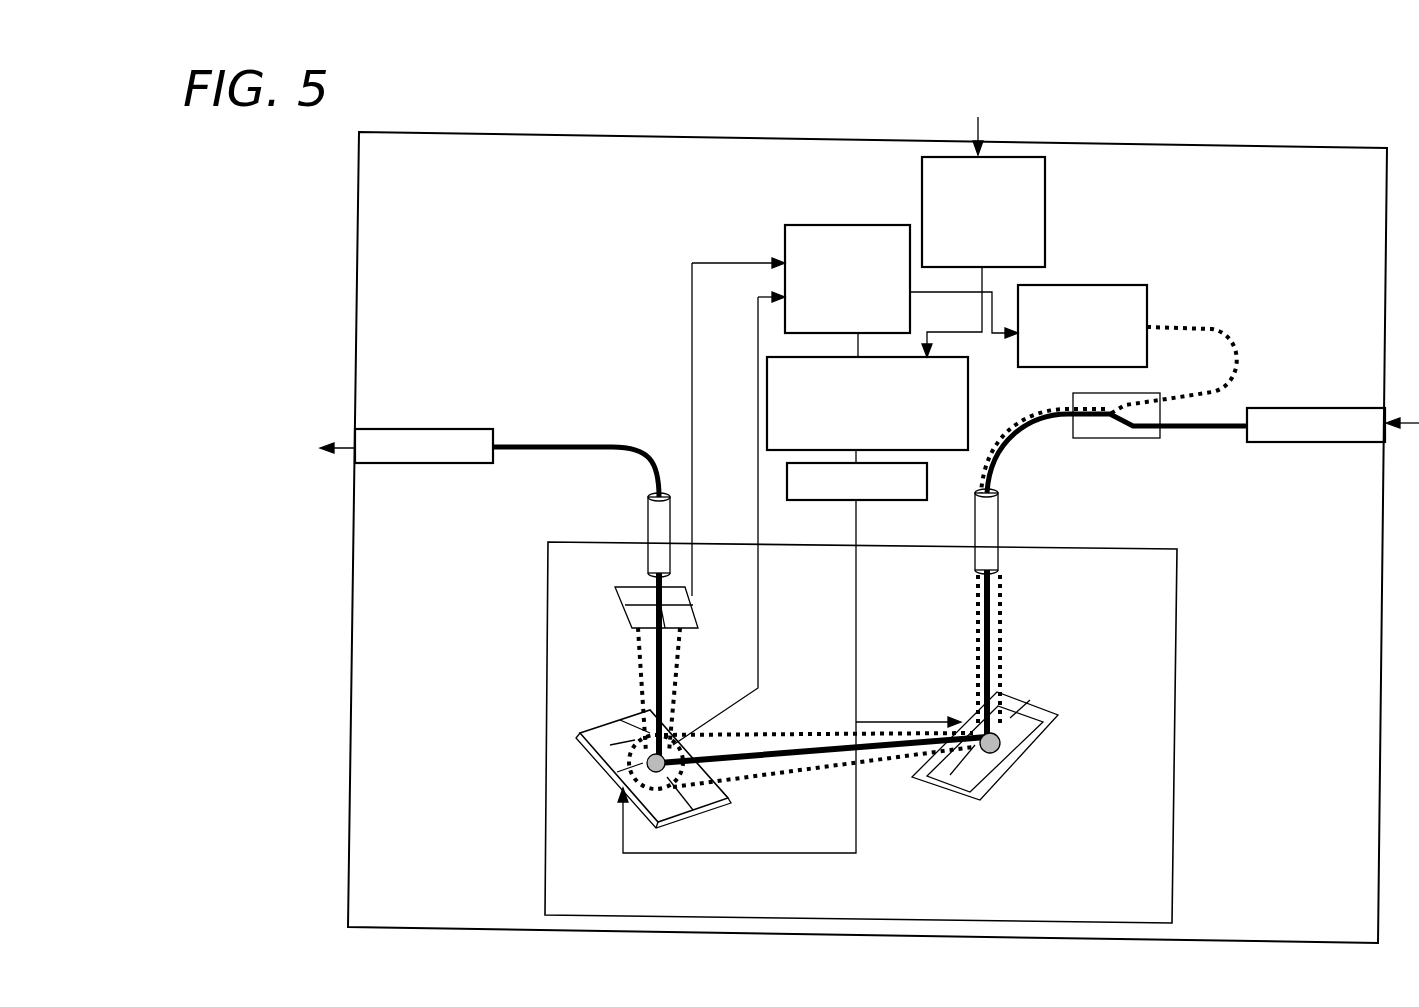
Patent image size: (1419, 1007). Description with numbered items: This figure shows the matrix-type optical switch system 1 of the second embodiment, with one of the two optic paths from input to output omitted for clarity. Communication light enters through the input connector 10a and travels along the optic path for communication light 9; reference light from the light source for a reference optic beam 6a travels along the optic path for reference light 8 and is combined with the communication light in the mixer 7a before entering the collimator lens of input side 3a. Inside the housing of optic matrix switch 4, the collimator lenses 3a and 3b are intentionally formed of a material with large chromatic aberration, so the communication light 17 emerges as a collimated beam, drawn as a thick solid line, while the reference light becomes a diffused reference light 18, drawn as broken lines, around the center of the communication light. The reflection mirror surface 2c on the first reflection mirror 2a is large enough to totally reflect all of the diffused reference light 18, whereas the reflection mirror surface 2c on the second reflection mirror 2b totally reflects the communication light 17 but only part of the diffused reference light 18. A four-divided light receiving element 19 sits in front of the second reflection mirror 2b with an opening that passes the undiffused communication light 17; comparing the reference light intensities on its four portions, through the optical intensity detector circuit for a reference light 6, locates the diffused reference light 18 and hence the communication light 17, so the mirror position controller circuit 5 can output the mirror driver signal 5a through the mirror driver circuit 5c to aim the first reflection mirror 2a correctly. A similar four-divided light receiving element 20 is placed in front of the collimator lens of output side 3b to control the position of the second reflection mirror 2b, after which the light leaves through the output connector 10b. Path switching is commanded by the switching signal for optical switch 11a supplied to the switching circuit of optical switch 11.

The optical switch system 1 is at (747, 137).
The first reflection mirror 2a is at (1060, 705).
The second reflection mirror 2b is at (618, 735).
The reflection mirror surface 2c is at (660, 775).
The collimator lens of input side 3a is at (1000, 524).
The collimator lens of output side 3b is at (648, 522).
The housing of optic matrix switch 4 is at (1177, 856).
The mirror position controller circuit 5 is at (968, 400).
The mirror driver signal 5a is at (855, 600).
The mirror driver circuit 5c is at (928, 482).
The optical intensity detector circuit for a reference light 6 is at (826, 222).
The light source for a reference optic beam 6a is at (1108, 283).
The mixer 7a is at (1128, 440).
The optic path for reference light 8 is at (1213, 332).
The optic path for communication light 9 is at (1240, 415).
The input connector 10a is at (1312, 444).
The output connector 10b is at (418, 465).
The switching circuit of optical switch 11 is at (1048, 185).
The switching signal for optical switch 11a is at (983, 125).
The communication light 17 is at (805, 748).
The diffused reference light 18 is at (757, 735).
The four-divided light receiving element 19 is at (617, 752).
The four-divided light receiving element 20 is at (683, 590).